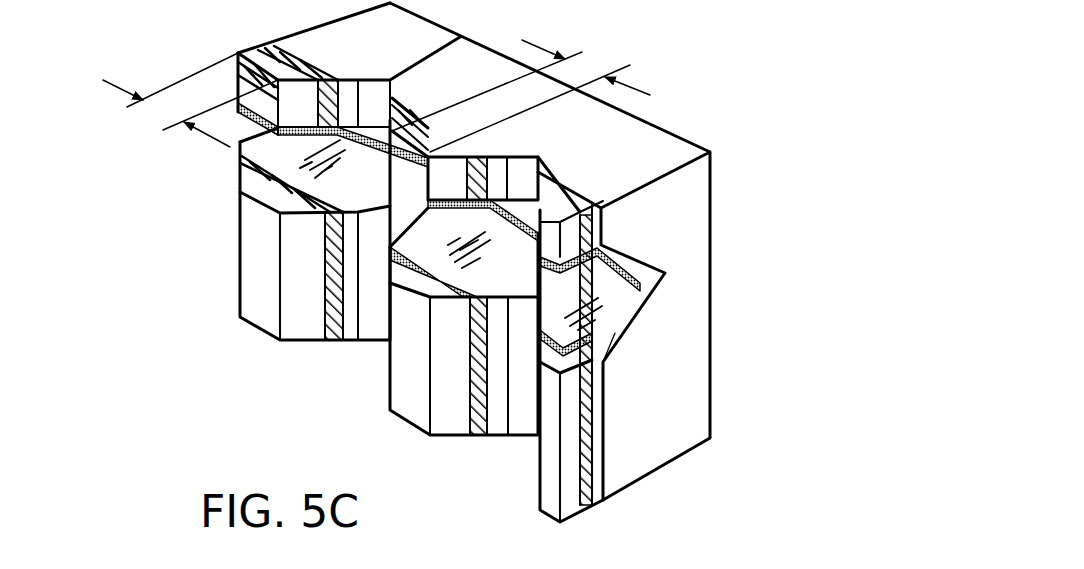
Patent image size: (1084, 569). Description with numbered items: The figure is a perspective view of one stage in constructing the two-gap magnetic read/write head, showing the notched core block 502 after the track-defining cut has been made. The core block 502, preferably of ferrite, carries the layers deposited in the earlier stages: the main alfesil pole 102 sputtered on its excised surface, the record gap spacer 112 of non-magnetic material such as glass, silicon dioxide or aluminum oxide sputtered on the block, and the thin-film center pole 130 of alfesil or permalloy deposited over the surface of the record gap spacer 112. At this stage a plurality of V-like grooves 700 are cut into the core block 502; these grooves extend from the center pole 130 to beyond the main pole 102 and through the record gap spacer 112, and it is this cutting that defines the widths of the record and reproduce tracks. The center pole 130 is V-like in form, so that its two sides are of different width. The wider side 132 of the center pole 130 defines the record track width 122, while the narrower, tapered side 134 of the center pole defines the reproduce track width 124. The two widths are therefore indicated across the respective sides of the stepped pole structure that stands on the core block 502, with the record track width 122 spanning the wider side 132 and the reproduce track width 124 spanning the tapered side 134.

The main alfesil pole 102 is at (322, 50).
The record gap spacer 112 is at (592, 503).
The record track width 122 is at (582, 63).
The reproduce track width 124 is at (158, 115).
The center pole 130 is at (412, 182).
The wider side of center pole 132 is at (427, 158).
The narrower tapered side of center pole 134 is at (238, 66).
The core block 502 is at (680, 197).
The V-like grooves 700 is at (524, 457).